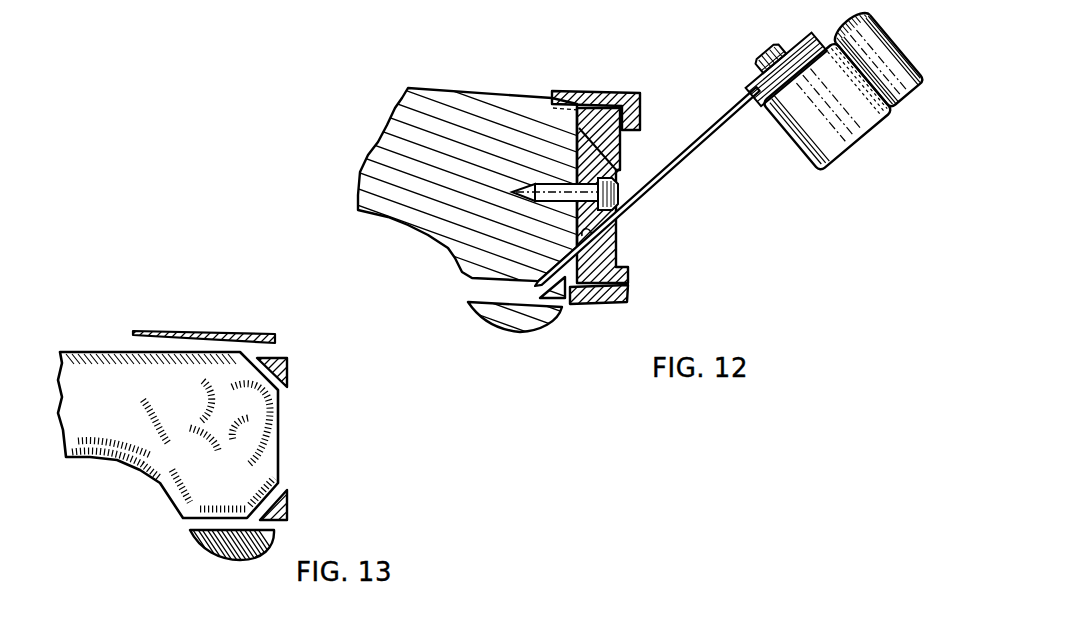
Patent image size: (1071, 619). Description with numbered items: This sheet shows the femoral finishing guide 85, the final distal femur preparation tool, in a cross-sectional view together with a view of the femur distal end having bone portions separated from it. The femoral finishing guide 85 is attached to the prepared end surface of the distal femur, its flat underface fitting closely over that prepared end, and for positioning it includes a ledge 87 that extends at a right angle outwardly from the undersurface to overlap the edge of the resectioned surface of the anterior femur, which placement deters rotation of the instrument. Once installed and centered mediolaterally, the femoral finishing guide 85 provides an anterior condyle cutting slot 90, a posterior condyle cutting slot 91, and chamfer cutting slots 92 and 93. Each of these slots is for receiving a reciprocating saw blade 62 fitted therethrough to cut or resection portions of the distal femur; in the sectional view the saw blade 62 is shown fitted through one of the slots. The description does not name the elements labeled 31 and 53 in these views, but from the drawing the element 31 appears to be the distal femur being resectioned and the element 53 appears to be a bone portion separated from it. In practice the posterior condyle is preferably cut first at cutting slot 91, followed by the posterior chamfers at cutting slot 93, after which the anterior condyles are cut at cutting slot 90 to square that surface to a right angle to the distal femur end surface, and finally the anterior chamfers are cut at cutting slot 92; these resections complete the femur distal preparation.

In FIG. 12, the workpiece log 31 is at (412, 228).
In FIG. 13, the workpiece log 31 is at (103, 460).
In FIG. 12, the cut slab segment 53 is at (527, 330).
In FIG. 13, the cut slab segment 53 is at (217, 553).
In FIG. 12, the reciprocating saw blade 62 is at (698, 148).
In FIG. 12, the femoral finishing guide 85 is at (608, 166).
In FIG. 12, the ledge 87 is at (553, 99).
In FIG. 12, the anterior condyle cutting slot 90 is at (641, 116).
In FIG. 12, the posterior condyle cutting slot 91 is at (630, 288).
In FIG. 12, the anterior chamfer cutting slot 92 is at (621, 148).
In FIG. 12, the posterior chamfer cutting slot 93 is at (592, 234).